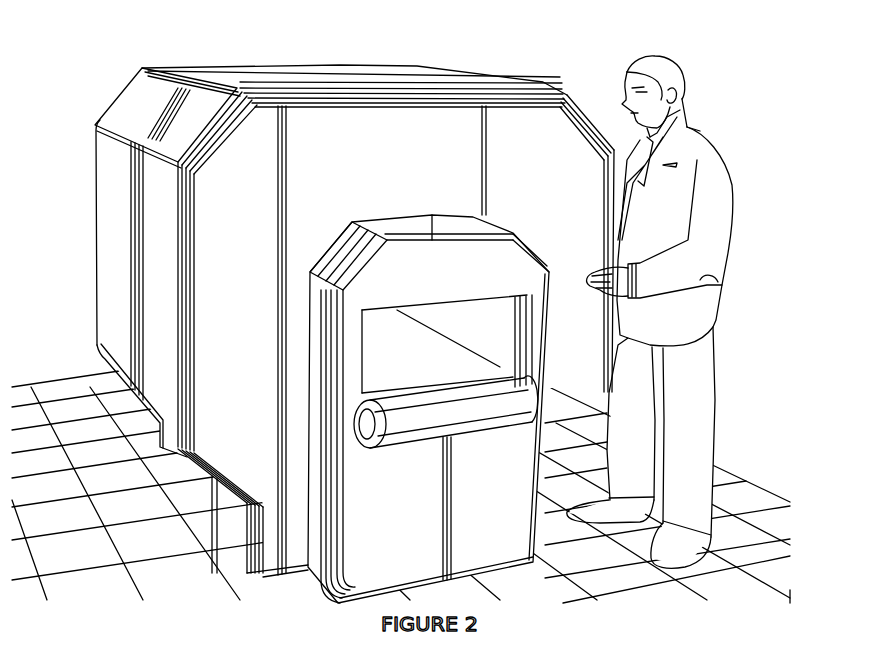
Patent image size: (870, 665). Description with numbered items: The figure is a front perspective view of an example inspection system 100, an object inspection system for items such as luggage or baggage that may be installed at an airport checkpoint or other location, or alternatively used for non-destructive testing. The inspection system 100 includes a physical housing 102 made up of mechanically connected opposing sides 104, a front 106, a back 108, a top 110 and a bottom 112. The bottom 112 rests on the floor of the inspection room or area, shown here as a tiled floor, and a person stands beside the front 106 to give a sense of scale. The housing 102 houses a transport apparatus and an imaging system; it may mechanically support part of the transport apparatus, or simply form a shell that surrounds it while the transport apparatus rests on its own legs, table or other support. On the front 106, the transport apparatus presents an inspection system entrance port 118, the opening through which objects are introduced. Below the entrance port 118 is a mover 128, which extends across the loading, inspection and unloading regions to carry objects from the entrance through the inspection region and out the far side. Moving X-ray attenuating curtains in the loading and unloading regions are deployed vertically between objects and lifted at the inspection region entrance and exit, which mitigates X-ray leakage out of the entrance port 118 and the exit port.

The inspection system 100 is at (85, 50).
The housing 102 is at (97, 290).
The opposing sides 104 is at (100, 197).
The front 106 is at (551, 181).
The back 108 is at (102, 95).
The top 110 is at (288, 52).
The bottom 112 is at (303, 584).
The inspection system entrance port 118 is at (413, 353).
The mover 128 is at (473, 429).